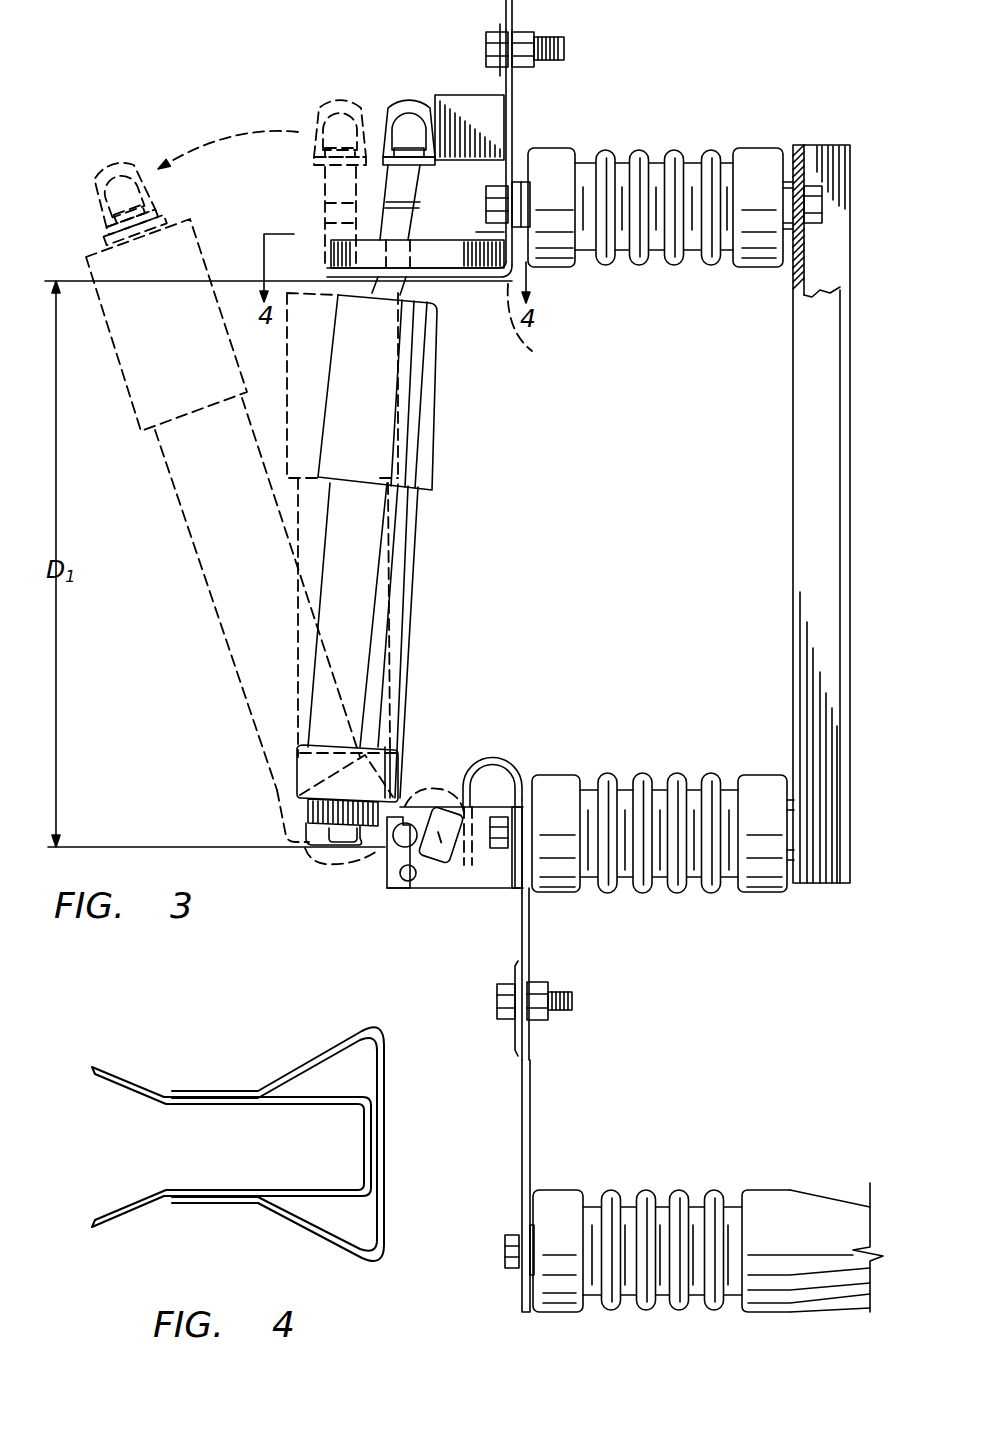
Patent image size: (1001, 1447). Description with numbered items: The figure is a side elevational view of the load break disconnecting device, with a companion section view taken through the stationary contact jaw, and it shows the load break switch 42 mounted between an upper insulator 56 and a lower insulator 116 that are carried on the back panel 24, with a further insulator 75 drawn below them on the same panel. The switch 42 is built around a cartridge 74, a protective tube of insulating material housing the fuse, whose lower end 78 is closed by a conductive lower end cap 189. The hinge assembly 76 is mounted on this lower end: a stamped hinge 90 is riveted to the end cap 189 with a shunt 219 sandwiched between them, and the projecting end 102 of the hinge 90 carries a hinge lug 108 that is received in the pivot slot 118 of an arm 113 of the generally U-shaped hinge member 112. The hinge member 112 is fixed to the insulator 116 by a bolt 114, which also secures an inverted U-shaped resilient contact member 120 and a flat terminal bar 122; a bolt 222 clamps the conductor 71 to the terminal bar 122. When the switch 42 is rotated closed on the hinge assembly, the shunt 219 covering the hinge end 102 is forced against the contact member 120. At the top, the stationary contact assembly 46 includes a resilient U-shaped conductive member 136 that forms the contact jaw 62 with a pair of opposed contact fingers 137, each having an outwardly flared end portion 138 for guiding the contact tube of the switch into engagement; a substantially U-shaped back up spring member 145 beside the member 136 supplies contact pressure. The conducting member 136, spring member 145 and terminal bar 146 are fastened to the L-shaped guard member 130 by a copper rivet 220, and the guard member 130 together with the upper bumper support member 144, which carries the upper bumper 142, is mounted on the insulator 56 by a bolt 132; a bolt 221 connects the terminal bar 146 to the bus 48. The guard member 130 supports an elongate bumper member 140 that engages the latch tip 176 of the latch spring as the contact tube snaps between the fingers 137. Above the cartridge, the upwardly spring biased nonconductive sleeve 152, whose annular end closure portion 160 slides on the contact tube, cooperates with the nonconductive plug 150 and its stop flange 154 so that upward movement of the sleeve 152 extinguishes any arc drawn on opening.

In FIG. 3, the back panel 24 is at (793, 417).
In FIG. 3, the load break switch 42 is at (424, 542).
In FIG. 3, the stationary contact assembly 46 is at (528, 370).
In FIG. 3, the bus 48 is at (508, 26).
In FIG. 3, the insulator 56 is at (560, 145).
In FIG. 3, the contact jaw 62 is at (437, 246).
In FIG. 4, the contact jaw 62 is at (230, 1190).
In FIG. 3, the conductor 71 is at (522, 1141).
In FIG. 3, the cartridge 74 is at (413, 600).
In FIG. 3, the lower resilient bushing 75 is at (557, 1310).
In FIG. 3, the hinge assembly 76 is at (305, 846).
In FIG. 3, the lower end 78 is at (306, 726).
In FIG. 3, the hinge 90 is at (383, 840).
In FIG. 3, the end of hinge 102 is at (432, 865).
In FIG. 3, the hinge lug 108 is at (402, 853).
In FIG. 3, the hinge member 112 is at (423, 880).
In FIG. 3, the arm 113 is at (392, 751).
In FIG. 3, the bolt 114 is at (484, 797).
In FIG. 3, the insulator 116 is at (564, 890).
In FIG. 3, the pivot slot 118 is at (411, 797).
In FIG. 3, the resilient contact member 120 is at (518, 760).
In FIG. 3, the terminal bar 122 is at (529, 944).
In FIG. 3, the guard member 130 is at (467, 279).
In FIG. 3, the bolt 132 is at (489, 203).
In FIG. 3, the conductive member 136 is at (342, 257).
In FIG. 4, the conductive member 136 is at (142, 1079).
In FIG. 4, the contact finger 137 is at (210, 1183).
In FIG. 4, the flared end portion 138 is at (100, 1218).
In FIG. 3, the bumper member 140 is at (422, 286).
In FIG. 3, the upper bumper 142 is at (450, 93).
In FIG. 3, the upper bumper support member 144 is at (508, 112).
In FIG. 4, the back up spring member 145 is at (333, 1045).
In FIG. 3, the terminal bar 146 is at (515, 78).
In FIG. 3, the nonconductive plug 150 is at (325, 186).
In FIG. 3, the nonconductive sleeve 152 is at (283, 445).
In FIG. 3, the stop flange 154 is at (106, 229).
In FIG. 3, the annular end closure portion 160 is at (100, 244).
In FIG. 3, the latch tip 176 is at (407, 301).
In FIG. 3, the lower end cap 189 is at (313, 760).
In FIG. 3, the shunt 219 is at (453, 873).
In FIG. 3, the rivet 220 is at (544, 324).
In FIG. 3, the bolt 221 is at (564, 46).
In FIG. 3, the bolt 222 is at (574, 1001).